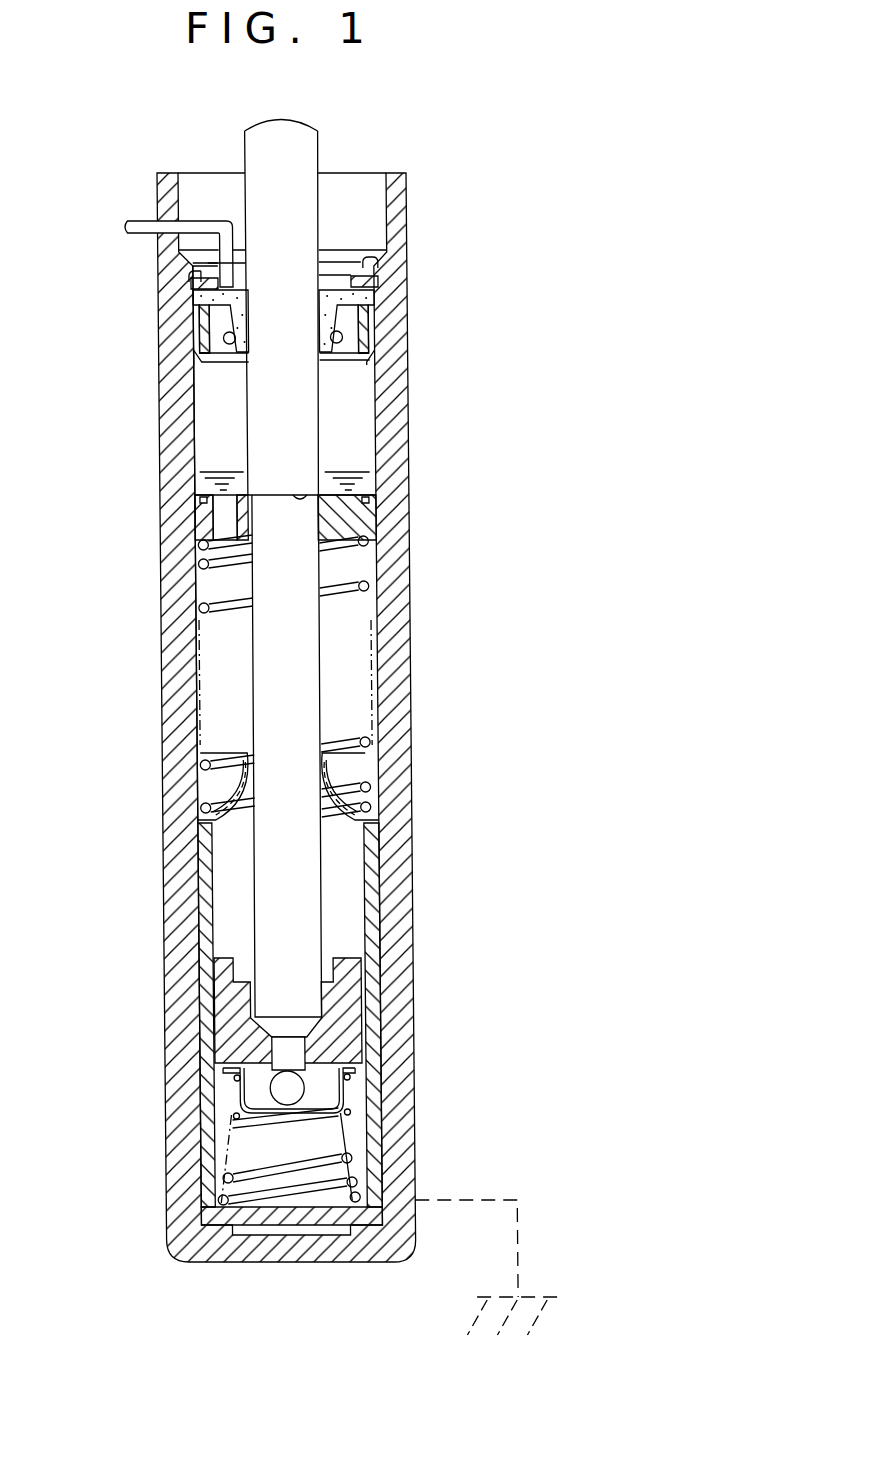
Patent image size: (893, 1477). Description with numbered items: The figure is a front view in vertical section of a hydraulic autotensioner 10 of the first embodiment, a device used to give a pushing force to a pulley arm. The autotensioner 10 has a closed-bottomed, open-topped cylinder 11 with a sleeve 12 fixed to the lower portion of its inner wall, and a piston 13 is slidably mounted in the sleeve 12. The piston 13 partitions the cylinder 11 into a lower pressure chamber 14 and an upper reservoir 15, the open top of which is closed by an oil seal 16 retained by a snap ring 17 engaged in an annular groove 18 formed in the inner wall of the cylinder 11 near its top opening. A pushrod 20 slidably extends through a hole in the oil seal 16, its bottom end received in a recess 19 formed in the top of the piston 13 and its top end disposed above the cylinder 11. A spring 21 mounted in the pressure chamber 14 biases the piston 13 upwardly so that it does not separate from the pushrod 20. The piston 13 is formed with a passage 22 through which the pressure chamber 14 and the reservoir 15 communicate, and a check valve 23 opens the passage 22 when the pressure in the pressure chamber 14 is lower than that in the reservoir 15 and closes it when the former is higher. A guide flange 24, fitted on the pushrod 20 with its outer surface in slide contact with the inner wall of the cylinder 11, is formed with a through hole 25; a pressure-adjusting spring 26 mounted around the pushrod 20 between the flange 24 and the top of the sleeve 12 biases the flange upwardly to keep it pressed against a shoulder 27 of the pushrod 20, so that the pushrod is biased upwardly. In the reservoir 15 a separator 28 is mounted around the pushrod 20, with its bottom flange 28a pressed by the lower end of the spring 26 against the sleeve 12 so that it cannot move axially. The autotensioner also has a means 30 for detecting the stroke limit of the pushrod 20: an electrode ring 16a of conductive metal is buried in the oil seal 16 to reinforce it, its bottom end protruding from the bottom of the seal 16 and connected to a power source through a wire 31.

The hydraulic autotensioner 10 is at (141, 160).
The cylinder 11 is at (163, 450).
The sleeve 12 is at (183, 878).
The piston 13 is at (205, 1023).
The pressure chamber 14 is at (213, 1117).
The reservoir 15 is at (210, 675).
The oil seal 16 is at (198, 306).
The electrode ring 16a is at (195, 368).
The snap ring 17 is at (190, 283).
The annular groove 18 is at (369, 268).
The recess 19 is at (313, 1000).
The pushrod 20 is at (293, 891).
The spring 21 is at (336, 1150).
The passage 22 is at (286, 1058).
The check valve 23 is at (312, 1085).
The guide flange 24 is at (360, 514).
The through hole 25 is at (214, 517).
The pressure-adjusting spring 26 is at (364, 607).
The shoulder 27 is at (309, 491).
The separator 28 is at (342, 780).
The bottom flange 28a is at (346, 800).
The means for detecting the stroke limit 30 is at (370, 375).
The wire 31 is at (148, 224).